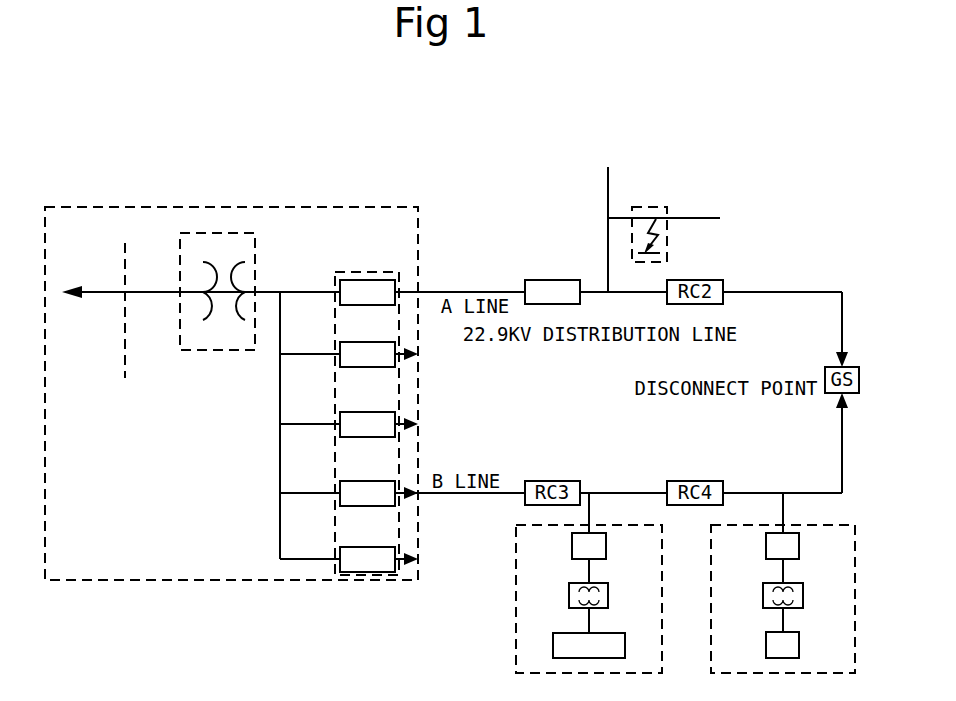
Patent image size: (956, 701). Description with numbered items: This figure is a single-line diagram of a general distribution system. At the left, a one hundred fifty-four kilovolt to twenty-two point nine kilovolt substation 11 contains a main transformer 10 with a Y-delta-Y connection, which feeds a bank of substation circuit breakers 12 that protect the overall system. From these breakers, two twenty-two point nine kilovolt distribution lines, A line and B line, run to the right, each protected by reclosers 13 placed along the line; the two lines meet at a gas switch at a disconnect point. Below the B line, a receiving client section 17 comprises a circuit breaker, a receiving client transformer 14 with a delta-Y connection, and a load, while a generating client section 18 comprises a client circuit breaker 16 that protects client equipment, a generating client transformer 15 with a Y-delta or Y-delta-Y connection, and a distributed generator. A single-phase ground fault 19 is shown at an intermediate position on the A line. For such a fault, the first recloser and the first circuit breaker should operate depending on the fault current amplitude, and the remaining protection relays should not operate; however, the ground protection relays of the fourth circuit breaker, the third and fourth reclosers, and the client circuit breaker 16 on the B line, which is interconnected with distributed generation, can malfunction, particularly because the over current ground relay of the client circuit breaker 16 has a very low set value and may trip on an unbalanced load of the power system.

The main transformer 10 is at (255, 240).
The substation 11 is at (264, 207).
The substation circuit breaker 12 is at (365, 272).
The recloser 13 is at (551, 280).
The receiving client transformer 14 is at (569, 596).
The generating client transformer 15 is at (763, 595).
The client circuit breaker 16 is at (766, 545).
The receiving client section 17 is at (516, 637).
The generating client section 18 is at (711, 640).
The single-phase ground fault 19 is at (668, 238).